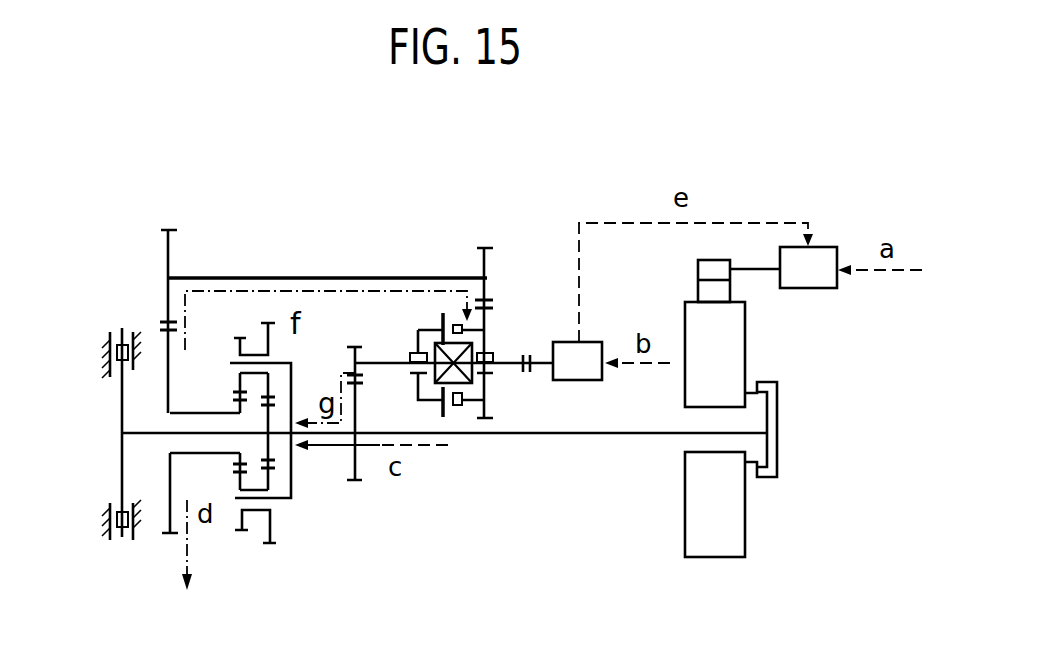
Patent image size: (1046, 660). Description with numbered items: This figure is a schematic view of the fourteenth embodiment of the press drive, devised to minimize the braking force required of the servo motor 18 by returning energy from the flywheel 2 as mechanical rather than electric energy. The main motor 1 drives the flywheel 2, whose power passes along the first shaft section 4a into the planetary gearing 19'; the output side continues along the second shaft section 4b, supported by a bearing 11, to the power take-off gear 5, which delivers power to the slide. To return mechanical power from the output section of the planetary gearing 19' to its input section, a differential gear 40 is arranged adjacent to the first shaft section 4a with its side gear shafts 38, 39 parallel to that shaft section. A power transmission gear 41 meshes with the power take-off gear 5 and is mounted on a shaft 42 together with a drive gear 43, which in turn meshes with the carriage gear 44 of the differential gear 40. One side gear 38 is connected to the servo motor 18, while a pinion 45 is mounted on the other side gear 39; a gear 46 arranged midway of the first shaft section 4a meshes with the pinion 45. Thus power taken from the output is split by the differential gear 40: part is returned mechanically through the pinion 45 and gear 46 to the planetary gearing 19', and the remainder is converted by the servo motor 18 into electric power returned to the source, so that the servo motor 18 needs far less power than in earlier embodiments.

The main motor 1 is at (808, 290).
The flywheel 2 is at (745, 523).
The first shaft section 4a is at (605, 437).
The second shaft section 4b is at (150, 432).
The power take-off gear 5 is at (170, 517).
The bearing 11 is at (118, 328).
The servo motor 18 is at (569, 341).
The planetary gearing 19' is at (259, 573).
The side gear 38 is at (507, 357).
The side gear 39 is at (393, 368).
The differential gear 40 is at (459, 410).
The power transmission gear 41 is at (168, 248).
The shaft 42 is at (328, 276).
The drive gear 43 is at (478, 255).
The carriage gear 44 is at (492, 312).
The pinion 45 is at (358, 356).
The gear 46 is at (353, 463).